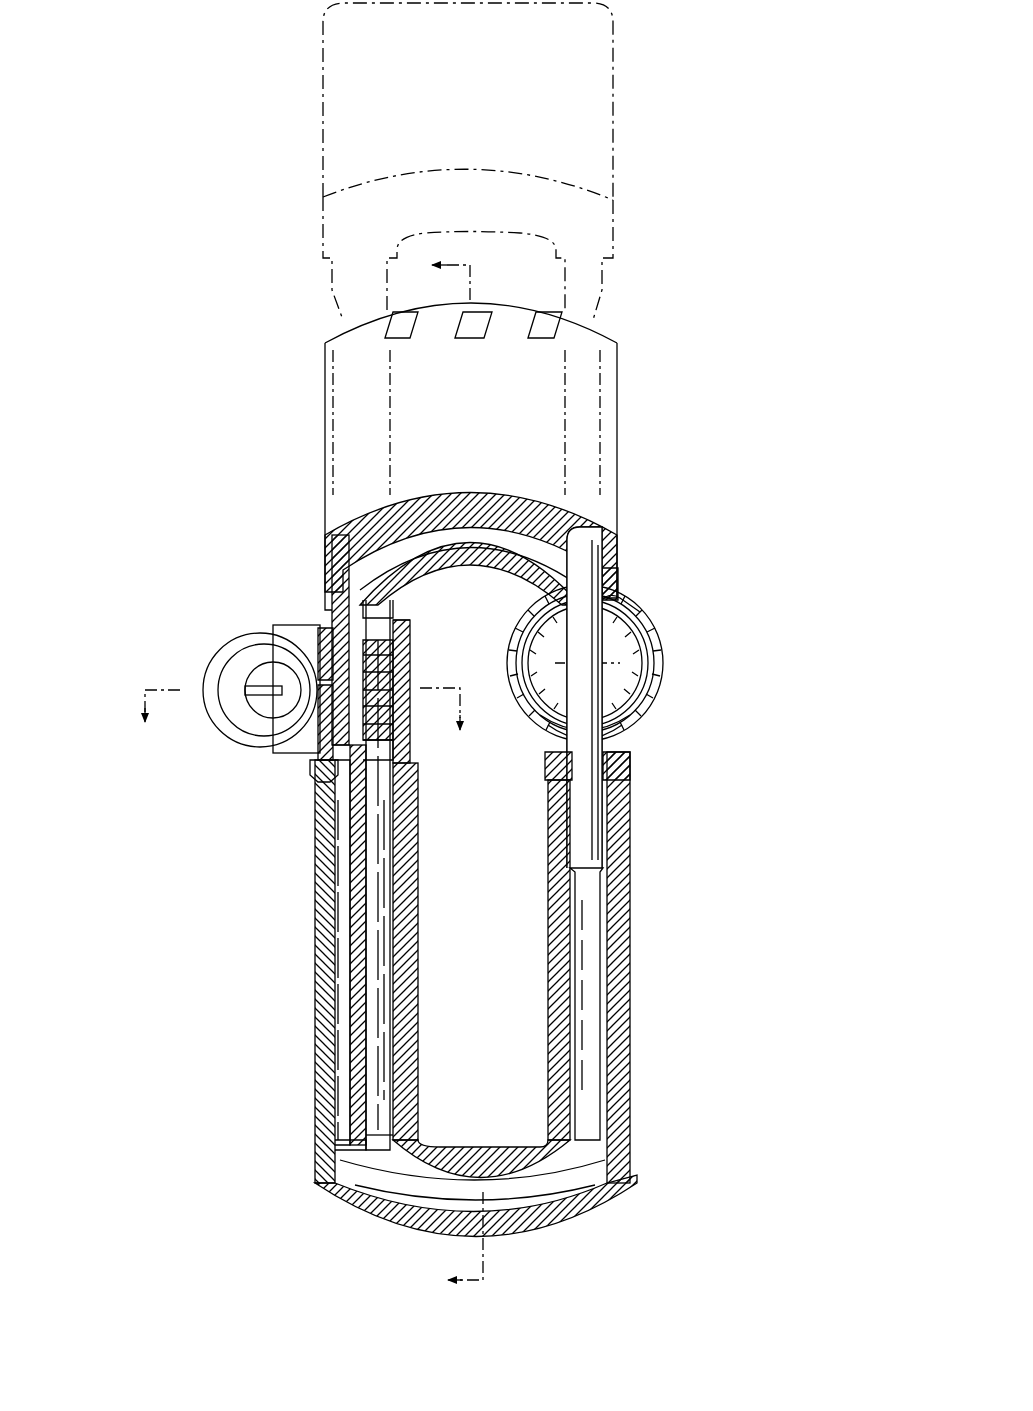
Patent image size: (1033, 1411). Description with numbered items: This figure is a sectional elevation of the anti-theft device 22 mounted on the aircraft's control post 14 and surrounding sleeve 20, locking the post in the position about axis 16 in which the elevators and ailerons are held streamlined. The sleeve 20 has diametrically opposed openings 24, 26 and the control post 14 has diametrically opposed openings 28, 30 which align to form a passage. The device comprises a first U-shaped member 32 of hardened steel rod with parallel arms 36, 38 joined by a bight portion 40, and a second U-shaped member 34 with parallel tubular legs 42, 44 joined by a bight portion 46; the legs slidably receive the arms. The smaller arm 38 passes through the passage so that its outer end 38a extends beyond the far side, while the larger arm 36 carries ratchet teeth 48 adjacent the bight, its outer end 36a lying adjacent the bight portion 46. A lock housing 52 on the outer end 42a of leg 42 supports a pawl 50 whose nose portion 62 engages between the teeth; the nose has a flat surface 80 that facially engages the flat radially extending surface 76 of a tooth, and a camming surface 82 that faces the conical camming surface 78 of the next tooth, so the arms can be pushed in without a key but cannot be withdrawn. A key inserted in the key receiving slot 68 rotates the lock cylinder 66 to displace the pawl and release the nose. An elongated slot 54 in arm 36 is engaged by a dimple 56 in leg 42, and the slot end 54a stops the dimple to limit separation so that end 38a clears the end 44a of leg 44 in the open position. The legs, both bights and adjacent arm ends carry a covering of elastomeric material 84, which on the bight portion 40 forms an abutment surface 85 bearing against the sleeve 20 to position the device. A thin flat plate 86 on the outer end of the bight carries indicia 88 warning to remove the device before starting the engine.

The control post 14 is at (645, 672).
The axis 16 is at (583, 665).
The sleeve 20 is at (662, 641).
The anti-theft device 22 is at (732, 316).
The opening 24 is at (614, 598).
The opening 26 is at (612, 731).
The opening 28 is at (632, 606).
The opening 30 is at (652, 707).
The first U-shaped member 32 is at (322, 556).
The second U-shaped member 34 is at (418, 1015).
The arm 36 is at (330, 284).
The outer end of arm 36a is at (340, 828).
The arm 38 is at (593, 293).
The outer end of arm 38a is at (592, 863).
The bight portion 40 is at (548, 532).
The tubular leg 42 is at (335, 985).
The outer end of leg 42a is at (410, 624).
The tubular leg 44 is at (608, 938).
The outer end of leg 44a is at (612, 769).
The bight portion 46 is at (545, 1208).
The ratchet teeth 48 is at (410, 652).
The pawl 50 is at (315, 697).
The lock housing 52 is at (218, 660).
The elongated slot 54 is at (343, 862).
The end of recess 54a is at (340, 1120).
The dimple 56 is at (332, 786).
The nose portion 62 is at (318, 650).
The lock cylinder 66 is at (244, 706).
The key receiving slot 68 is at (258, 688).
The flat radially extending surface 76 is at (395, 682).
The conical camming surface 78 is at (412, 738).
The flat surface 80 is at (322, 742).
The camming surface 82 is at (392, 612).
The elastomeric material covering 84 is at (523, 500).
The abutment surface 85 is at (612, 603).
The flat plate 86 is at (600, 75).
The indicia 88 is at (350, 412).